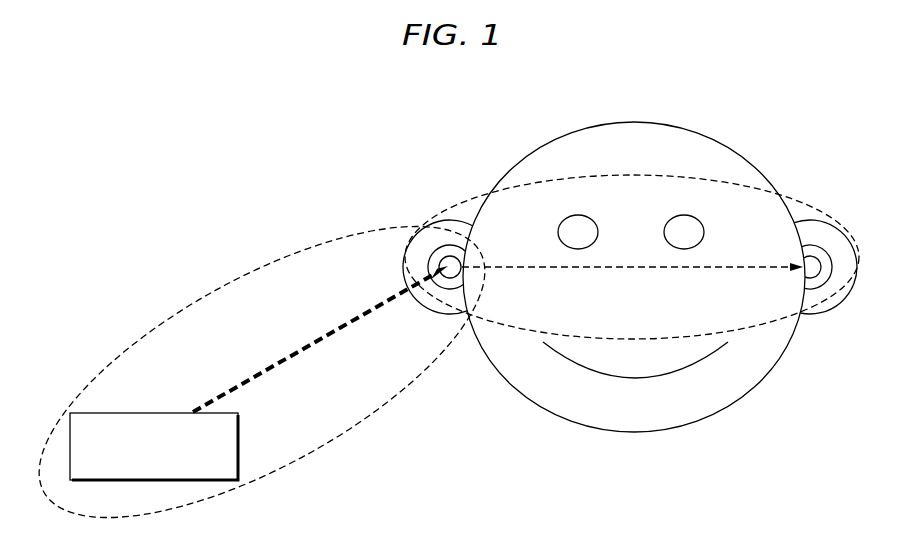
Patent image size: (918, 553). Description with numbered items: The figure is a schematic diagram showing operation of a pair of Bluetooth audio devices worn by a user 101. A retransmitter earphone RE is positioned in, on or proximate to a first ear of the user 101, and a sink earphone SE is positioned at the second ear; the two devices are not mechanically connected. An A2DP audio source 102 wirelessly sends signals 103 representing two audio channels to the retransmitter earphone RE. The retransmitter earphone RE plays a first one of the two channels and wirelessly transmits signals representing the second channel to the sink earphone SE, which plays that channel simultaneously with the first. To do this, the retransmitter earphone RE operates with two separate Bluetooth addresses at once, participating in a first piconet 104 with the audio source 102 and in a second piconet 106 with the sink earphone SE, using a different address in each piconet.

The user 101 is at (733, 405).
The A2DP audio source 102 is at (239, 438).
The signals 103 is at (263, 373).
The Bluetooth piconet 104 is at (214, 292).
The Bluetooth piconet 106 is at (800, 205).
The retransmitter earphone RE is at (440, 262).
The sink earphone SE is at (814, 290).